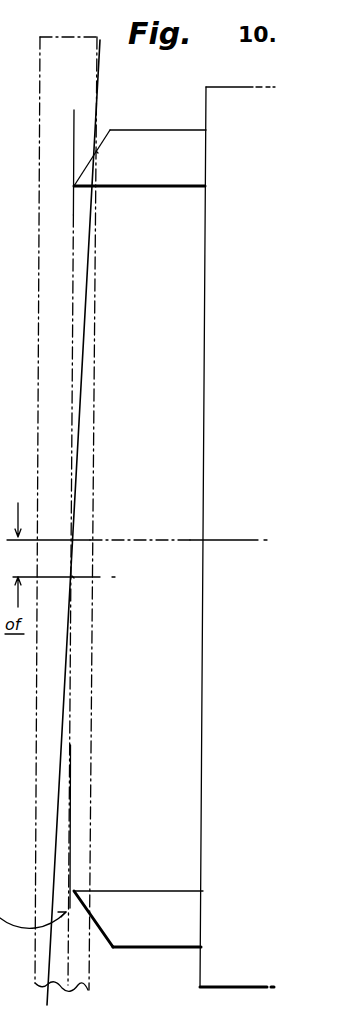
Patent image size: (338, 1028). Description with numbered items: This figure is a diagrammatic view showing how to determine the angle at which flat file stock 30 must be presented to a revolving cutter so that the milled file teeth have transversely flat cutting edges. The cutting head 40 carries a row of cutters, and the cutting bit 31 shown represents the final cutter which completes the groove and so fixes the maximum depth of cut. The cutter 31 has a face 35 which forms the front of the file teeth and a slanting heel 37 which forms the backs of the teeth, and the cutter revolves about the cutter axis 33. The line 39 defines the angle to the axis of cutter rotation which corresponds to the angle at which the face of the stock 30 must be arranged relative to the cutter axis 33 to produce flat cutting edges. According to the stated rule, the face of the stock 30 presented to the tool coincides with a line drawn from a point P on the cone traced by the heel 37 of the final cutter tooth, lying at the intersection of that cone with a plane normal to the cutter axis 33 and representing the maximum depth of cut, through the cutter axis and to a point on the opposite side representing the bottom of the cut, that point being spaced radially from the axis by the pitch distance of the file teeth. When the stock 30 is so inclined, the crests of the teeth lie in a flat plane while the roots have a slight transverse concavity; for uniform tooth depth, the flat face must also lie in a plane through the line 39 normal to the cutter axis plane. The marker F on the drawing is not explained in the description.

The file stock 30 is at (38, 272).
The cutter 31 is at (157, 134).
The cutter axis 33 is at (247, 536).
The face of the cutter 35 is at (172, 189).
The slanting heel 37 is at (100, 938).
The line 39 is at (60, 800).
The cutting head 40 is at (218, 106).
The point on cone traced by heel P is at (97, 152).
The point F' F is at (73, 576).